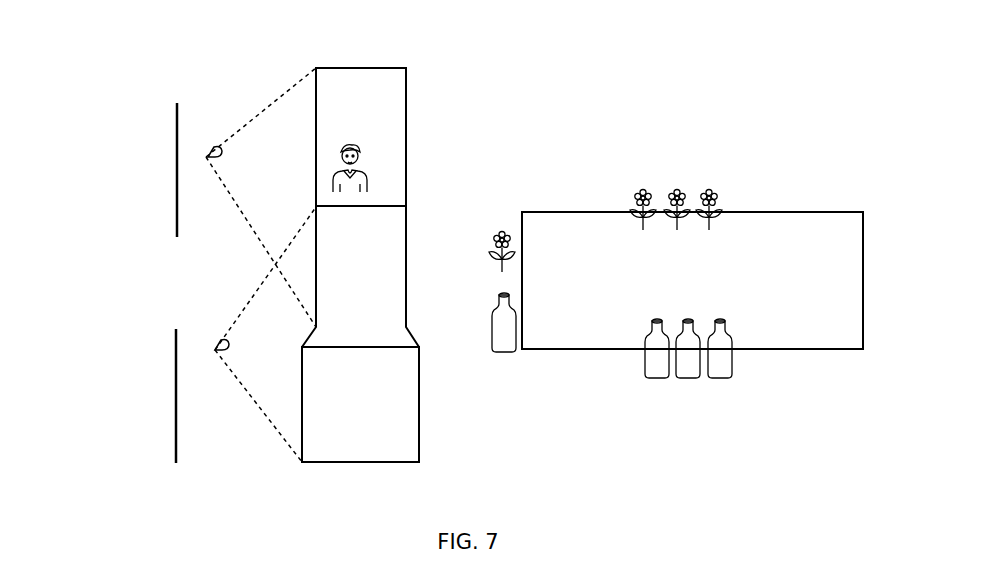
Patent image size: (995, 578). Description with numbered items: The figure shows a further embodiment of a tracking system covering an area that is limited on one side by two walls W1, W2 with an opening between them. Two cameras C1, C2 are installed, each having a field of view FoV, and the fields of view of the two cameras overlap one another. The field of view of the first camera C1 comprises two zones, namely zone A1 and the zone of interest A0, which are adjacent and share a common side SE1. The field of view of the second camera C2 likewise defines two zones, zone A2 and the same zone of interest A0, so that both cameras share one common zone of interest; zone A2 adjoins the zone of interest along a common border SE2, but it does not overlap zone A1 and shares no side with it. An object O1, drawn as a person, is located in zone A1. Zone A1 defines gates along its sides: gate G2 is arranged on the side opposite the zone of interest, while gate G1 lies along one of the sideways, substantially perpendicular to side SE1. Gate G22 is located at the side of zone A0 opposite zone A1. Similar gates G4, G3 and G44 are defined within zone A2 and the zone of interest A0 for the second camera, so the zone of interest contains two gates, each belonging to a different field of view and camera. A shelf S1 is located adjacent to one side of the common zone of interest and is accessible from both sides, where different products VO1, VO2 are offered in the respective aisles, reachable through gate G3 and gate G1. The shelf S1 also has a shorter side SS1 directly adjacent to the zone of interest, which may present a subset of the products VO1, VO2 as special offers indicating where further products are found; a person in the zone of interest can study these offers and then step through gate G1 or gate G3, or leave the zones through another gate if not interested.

The wall W1 is at (176, 190).
The wall W2 is at (176, 395).
The first camera C1 is at (212, 143).
The second camera C2 is at (213, 345).
The field of view FoV is at (293, 140).
The zone A1 is at (387, 120).
The zone of interest A0 is at (387, 280).
The zone A2 is at (394, 420).
The object (person) O1 is at (351, 135).
The gate G1 is at (394, 153).
The gate G2 is at (381, 84).
The gate G3 is at (404, 443).
The gate G4 is at (356, 441).
The gate G44 is at (375, 208).
The gate G22 is at (360, 335).
The common side SE1 is at (385, 206).
The common border SE2 is at (390, 347).
The shelf S1 is at (692, 280).
The shorter side SS1 is at (522, 278).
The products VO1 is at (513, 210).
The products VO2 is at (508, 365).